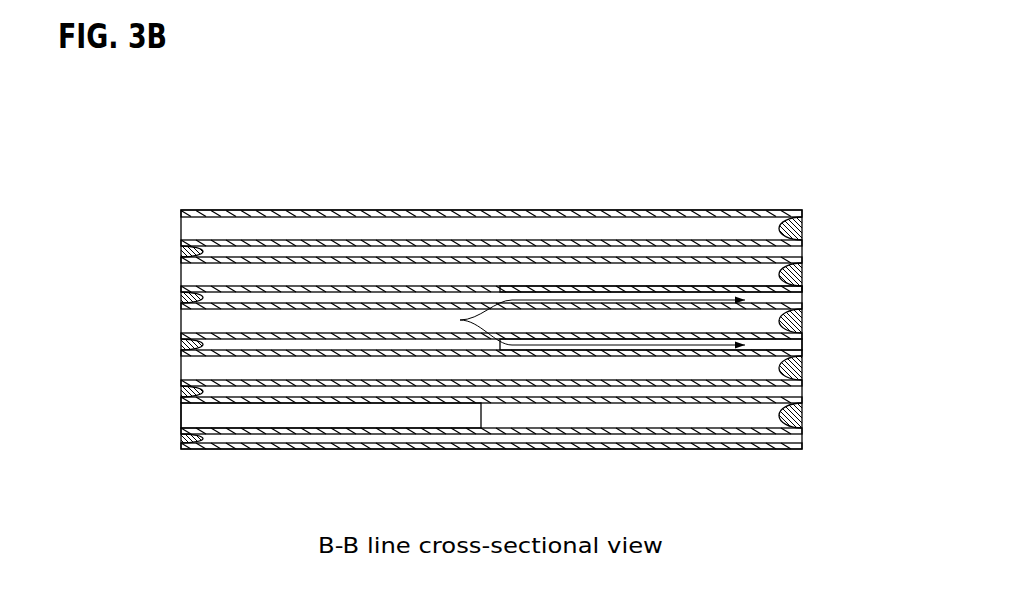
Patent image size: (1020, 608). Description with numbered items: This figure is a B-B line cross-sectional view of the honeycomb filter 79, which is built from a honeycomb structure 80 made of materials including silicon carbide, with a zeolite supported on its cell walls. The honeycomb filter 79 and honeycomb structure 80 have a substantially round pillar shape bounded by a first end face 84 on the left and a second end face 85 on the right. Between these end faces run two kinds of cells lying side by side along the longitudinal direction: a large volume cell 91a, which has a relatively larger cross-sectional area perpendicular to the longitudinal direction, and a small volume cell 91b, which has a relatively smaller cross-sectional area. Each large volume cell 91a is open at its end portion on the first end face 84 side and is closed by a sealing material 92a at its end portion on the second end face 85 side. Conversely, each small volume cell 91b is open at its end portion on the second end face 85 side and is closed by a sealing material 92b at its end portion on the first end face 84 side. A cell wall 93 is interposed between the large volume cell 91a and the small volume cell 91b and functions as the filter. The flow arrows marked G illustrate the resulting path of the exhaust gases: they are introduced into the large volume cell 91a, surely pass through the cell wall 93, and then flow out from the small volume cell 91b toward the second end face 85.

The honeycomb filter 79 is at (540, 190).
The honeycomb structure 80 is at (491, 329).
The first end face 84 is at (181, 289).
The second end face 85 is at (802, 287).
The large volume cell 91a is at (196, 412).
The small volume cell 91b is at (795, 343).
The sealing material 92a is at (795, 412).
The sealing material 92b is at (181, 249).
The cell wall 93 is at (342, 398).
The gas flow G is at (460, 320).